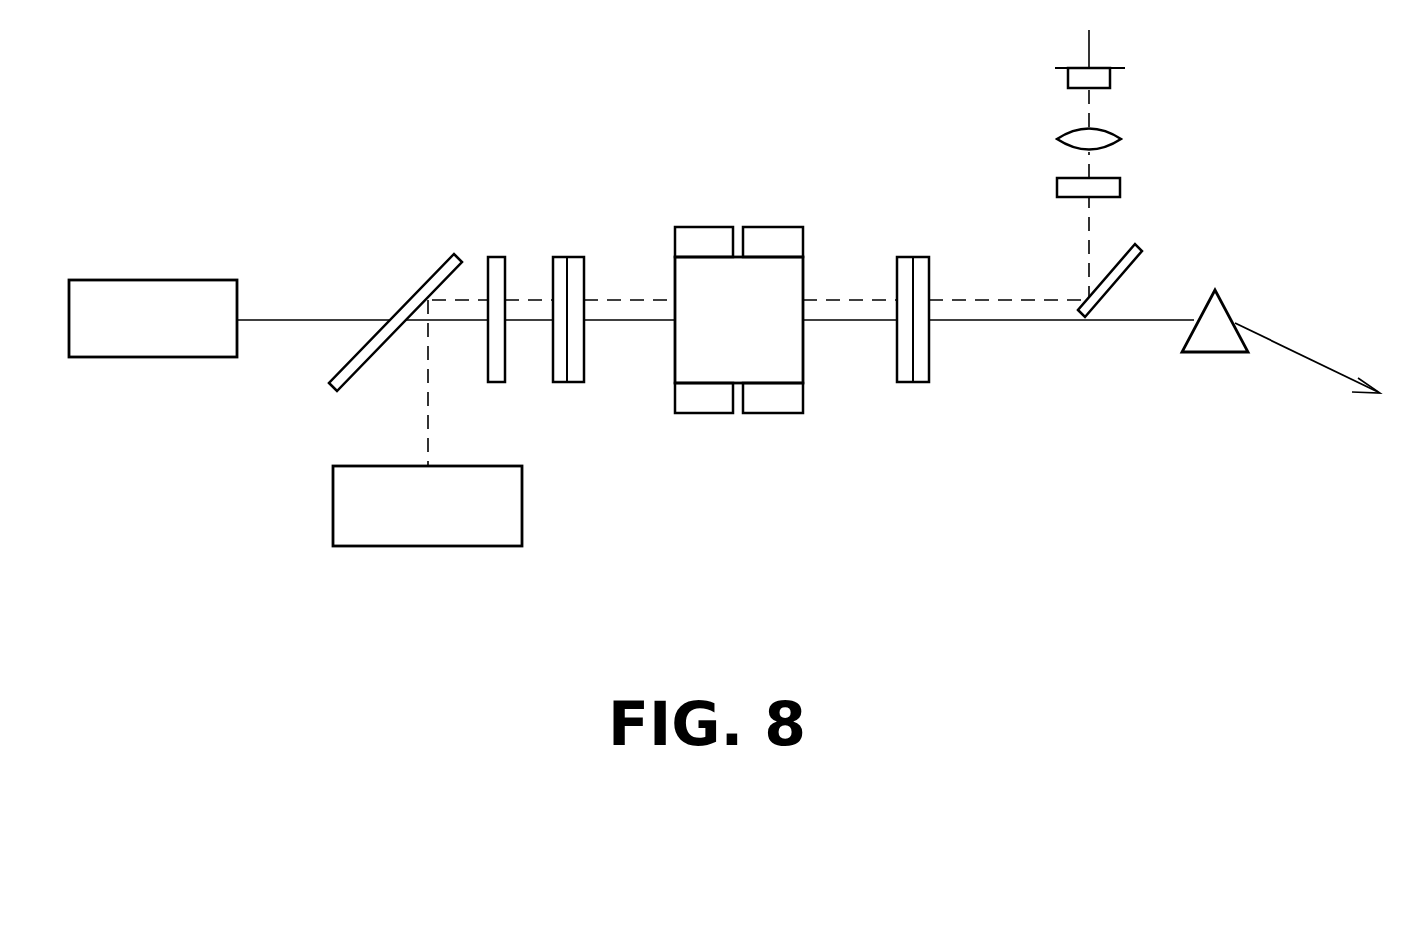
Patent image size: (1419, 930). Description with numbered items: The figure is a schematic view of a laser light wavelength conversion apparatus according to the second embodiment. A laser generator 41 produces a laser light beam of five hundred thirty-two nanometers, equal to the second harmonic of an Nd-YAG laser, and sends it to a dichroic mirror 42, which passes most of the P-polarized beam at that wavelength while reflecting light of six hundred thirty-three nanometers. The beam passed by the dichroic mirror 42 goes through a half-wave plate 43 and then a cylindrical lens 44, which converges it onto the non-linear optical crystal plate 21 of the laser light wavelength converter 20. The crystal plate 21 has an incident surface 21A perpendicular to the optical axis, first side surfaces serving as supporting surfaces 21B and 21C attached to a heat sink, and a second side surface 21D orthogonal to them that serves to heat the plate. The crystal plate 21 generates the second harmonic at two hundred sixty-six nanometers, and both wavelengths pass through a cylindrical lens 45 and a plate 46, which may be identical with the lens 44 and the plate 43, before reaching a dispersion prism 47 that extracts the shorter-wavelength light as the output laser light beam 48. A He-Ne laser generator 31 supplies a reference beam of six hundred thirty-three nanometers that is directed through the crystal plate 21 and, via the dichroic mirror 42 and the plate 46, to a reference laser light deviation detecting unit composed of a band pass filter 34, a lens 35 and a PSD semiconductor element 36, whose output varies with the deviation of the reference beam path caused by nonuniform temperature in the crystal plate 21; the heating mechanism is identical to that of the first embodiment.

The laser light wavelength converter 20 is at (770, 284).
The non-linear optical crystal plate 21 is at (790, 270).
The incident surface 21A is at (700, 413).
The supporting surface 21B is at (785, 413).
The supporting surface 21C is at (697, 227).
The second side surface 21D is at (788, 230).
The He-Ne laser generator 31 is at (420, 546).
The band pass filter 34 is at (1120, 188).
The lens 35 is at (1121, 136).
The PSD semiconductor element 36 is at (1110, 80).
The laser generator 41 is at (155, 280).
The dichroic mirror 42 is at (412, 297).
The λ/2 plate 43 is at (497, 257).
The cylindrical lens 44 is at (577, 257).
The cylindrical lens 45 is at (921, 257).
The plate 46 is at (1140, 247).
The dispersion prism 47 is at (1222, 298).
The output laser light beam 48 is at (1315, 356).